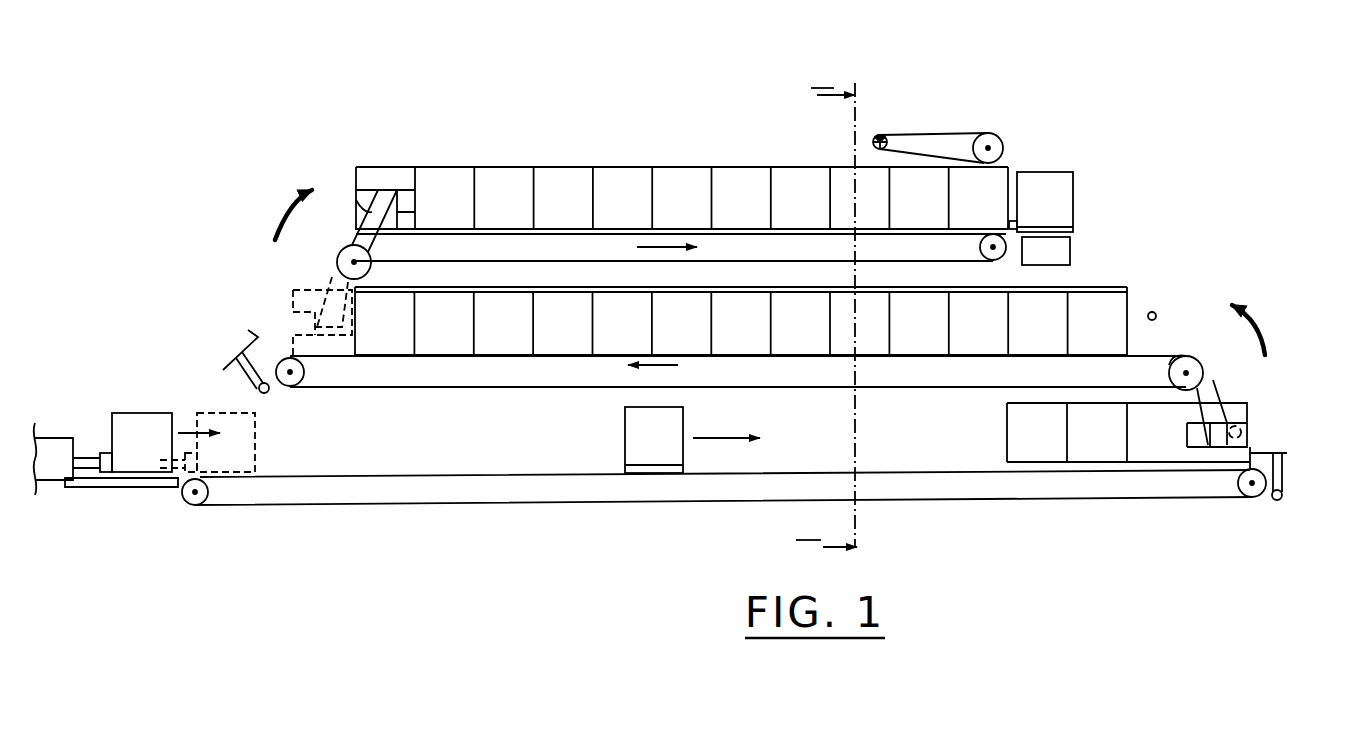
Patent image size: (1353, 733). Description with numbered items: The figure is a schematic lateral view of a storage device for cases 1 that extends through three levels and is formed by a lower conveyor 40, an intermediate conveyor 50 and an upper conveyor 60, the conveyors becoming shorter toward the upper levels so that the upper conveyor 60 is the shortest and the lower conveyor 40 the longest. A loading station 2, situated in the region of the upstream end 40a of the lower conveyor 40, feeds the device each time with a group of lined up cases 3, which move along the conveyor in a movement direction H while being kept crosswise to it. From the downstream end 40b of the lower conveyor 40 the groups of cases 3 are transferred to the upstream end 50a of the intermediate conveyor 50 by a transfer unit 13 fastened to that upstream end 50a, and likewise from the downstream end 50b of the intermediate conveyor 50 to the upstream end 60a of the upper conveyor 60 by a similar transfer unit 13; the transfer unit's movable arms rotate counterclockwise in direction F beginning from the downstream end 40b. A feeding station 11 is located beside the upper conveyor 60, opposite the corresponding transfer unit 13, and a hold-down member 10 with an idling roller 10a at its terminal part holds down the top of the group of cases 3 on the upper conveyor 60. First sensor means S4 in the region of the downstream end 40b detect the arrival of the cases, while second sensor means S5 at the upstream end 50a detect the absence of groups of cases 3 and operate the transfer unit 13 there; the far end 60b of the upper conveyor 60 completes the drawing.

The storage device for cases 1 is at (126, 52).
The loading station 2 is at (85, 383).
The cases 3 is at (632, 447).
The hold-down member 10 is at (942, 128).
The idling roller 10a is at (990, 134).
The feeding station 11 is at (1057, 250).
The transfer unit 13 is at (1208, 367).
The lower conveyor 40 is at (338, 503).
The upstream end of the lower conveyor 40a is at (193, 513).
The downstream end of the lower conveyor 40b is at (1243, 502).
The intermediate conveyor 50 is at (483, 387).
The upstream end of the intermediate conveyor 50a is at (1190, 340).
The downstream end of the intermediate conveyor 50b is at (272, 328).
The upper conveyor 60 is at (545, 263).
The upstream end of the upper conveyor 60a is at (338, 220).
The upper conveyor right end roller 60b is at (967, 255).
The first sensor means S4 is at (1247, 430).
The second sensor means S5 is at (1158, 312).
The direction of counterclockwise rotation F is at (1259, 326).
The movement direction H is at (742, 438).